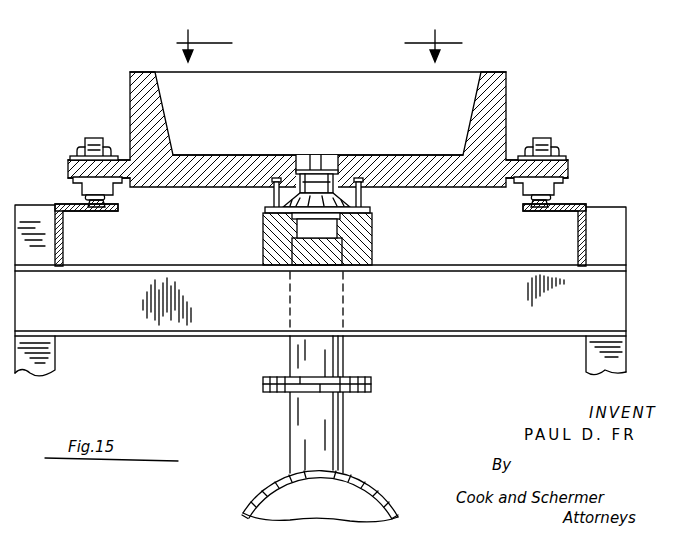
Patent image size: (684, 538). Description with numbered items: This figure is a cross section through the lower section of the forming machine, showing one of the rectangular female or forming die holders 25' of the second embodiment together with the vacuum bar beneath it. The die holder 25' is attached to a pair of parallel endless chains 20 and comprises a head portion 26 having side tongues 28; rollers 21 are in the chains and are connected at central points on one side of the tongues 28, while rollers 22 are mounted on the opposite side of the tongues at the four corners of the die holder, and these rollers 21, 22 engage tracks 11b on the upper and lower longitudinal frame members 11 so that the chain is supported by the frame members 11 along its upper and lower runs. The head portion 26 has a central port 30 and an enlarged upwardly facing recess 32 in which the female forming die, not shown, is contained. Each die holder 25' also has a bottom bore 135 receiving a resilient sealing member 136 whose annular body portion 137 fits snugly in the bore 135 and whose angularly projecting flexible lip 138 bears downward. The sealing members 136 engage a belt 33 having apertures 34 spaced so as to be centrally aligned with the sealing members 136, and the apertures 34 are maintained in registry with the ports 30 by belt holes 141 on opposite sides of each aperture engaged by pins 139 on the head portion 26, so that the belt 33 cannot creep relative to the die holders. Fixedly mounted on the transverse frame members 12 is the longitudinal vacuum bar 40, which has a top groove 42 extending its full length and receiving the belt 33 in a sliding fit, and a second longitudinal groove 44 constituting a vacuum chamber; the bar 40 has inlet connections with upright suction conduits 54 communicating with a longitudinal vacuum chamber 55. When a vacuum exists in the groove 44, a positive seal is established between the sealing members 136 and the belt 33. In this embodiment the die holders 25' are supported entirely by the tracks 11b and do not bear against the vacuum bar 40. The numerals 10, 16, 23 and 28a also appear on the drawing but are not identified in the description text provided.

The base frame member 10 is at (55, 358).
The longitudinal frame member 11 is at (119, 213).
The track 11b is at (107, 207).
The transverse frame member 12 is at (548, 338).
The direction of vibratory motion 16 is at (319, 34).
The endless chain 20 is at (86, 200).
The roller 21 is at (97, 210).
The roller 22 is at (89, 138).
The bracket 23 is at (75, 184).
The forming die holder 25' is at (567, 63).
The head portion 26 is at (457, 188).
The side tongue 28 is at (68, 166).
The lug 28a is at (82, 148).
The central port 30 is at (322, 155).
The upwardly facing recess 32 is at (478, 90).
The belt 33 is at (265, 210).
The aperture 34 is at (308, 235).
The vacuum bar 40 is at (358, 260).
The top groove 42 is at (372, 218).
The second longitudinal groove 44 is at (310, 233).
The suction conduit 54 is at (272, 377).
The vacuum chamber 55 is at (360, 488).
The bottom bore 135 is at (296, 190).
The resilient sealing member 136 is at (302, 180).
The annular body portion 137 is at (333, 172).
The flexible lip 138 is at (285, 198).
The pin 139 is at (363, 182).
The belt hole 141 is at (296, 214).